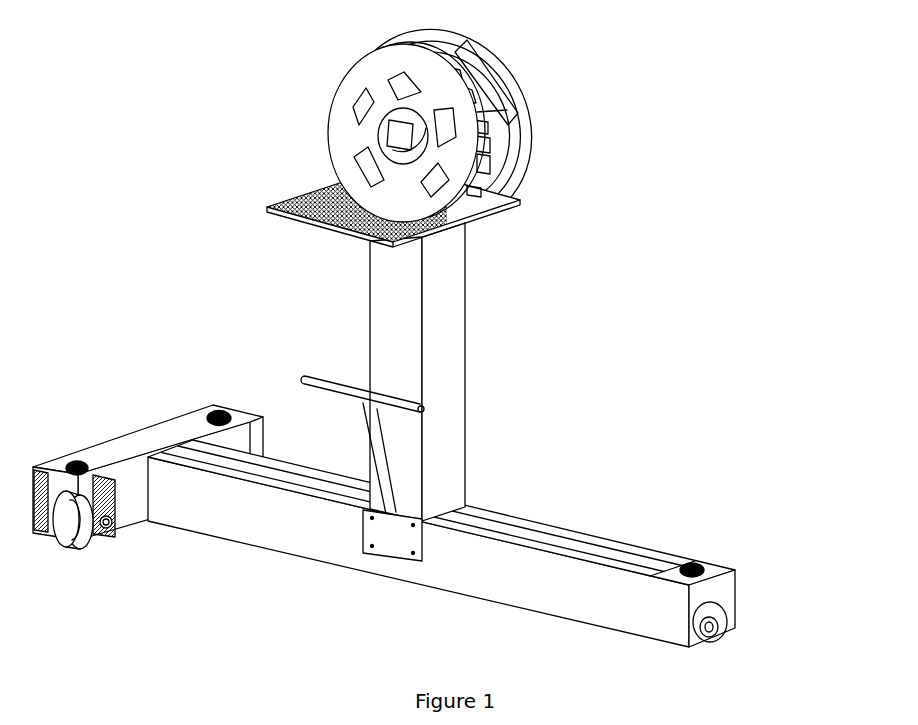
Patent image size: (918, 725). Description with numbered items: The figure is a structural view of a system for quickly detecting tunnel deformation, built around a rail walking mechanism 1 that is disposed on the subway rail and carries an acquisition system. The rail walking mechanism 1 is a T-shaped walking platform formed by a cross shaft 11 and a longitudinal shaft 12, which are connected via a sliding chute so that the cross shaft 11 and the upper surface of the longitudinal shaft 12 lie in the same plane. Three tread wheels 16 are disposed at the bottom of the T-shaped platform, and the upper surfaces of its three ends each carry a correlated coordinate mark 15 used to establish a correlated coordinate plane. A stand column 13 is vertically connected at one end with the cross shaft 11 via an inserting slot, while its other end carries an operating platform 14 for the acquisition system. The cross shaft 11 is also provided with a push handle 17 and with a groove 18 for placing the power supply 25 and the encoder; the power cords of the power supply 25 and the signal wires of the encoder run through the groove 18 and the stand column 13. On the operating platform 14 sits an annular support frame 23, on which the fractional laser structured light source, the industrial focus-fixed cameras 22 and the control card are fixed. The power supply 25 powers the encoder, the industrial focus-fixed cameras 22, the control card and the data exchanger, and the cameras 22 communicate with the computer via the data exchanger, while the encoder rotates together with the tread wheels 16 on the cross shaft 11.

The rail walking mechanism 1 is at (405, 489).
The cross shaft 11 is at (462, 516).
The longitudinal shaft 12 is at (148, 481).
The stand column 13 is at (462, 324).
The operating platform 14 is at (320, 208).
The correlated coordinate mark 15 is at (700, 560).
The tread wheel 16 is at (75, 533).
The push handle 17 is at (345, 390).
The groove 18 is at (495, 515).
The industrial focus-fixed camera 22 is at (490, 160).
The annular support frame 23 is at (493, 113).
The power supply 25 is at (603, 548).